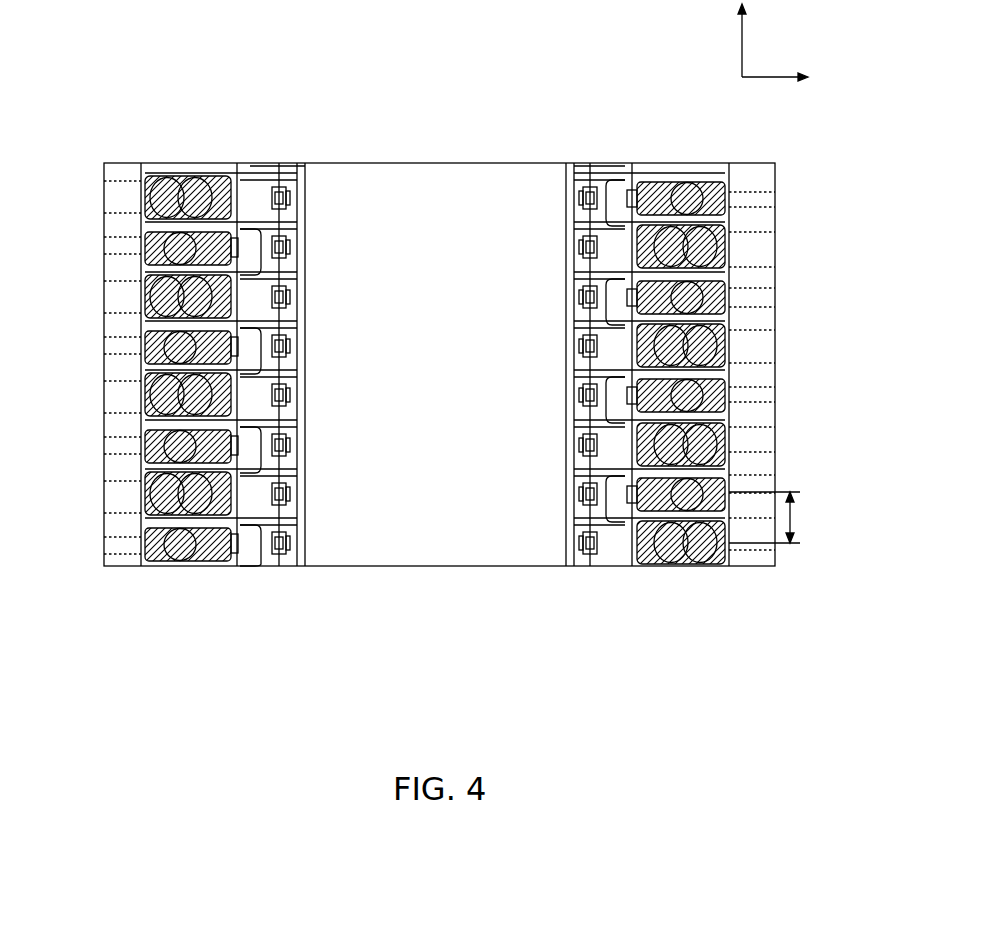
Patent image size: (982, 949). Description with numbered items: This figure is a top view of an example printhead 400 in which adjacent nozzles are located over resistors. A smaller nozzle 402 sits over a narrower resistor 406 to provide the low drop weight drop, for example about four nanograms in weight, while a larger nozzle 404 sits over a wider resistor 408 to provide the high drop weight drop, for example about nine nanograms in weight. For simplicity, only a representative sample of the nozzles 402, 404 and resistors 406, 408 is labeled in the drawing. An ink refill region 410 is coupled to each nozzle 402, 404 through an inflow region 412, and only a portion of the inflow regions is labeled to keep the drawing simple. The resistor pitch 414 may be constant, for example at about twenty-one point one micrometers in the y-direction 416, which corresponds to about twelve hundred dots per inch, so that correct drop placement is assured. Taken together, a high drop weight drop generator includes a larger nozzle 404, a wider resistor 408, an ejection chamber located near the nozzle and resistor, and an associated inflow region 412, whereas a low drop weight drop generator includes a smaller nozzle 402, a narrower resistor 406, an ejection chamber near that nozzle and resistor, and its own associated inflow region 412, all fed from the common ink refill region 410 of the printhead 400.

The printhead 400 is at (468, 762).
The smaller nozzle 402 is at (165, 248).
The larger nozzle 404 is at (150, 198).
The narrower resistor 406 is at (143, 250).
The wider resistor 408 is at (147, 172).
The ink refill region 410 is at (425, 163).
The inflow region 412 is at (251, 246).
The resistor pitch 414 is at (795, 520).
The y-direction 416 is at (740, 48).